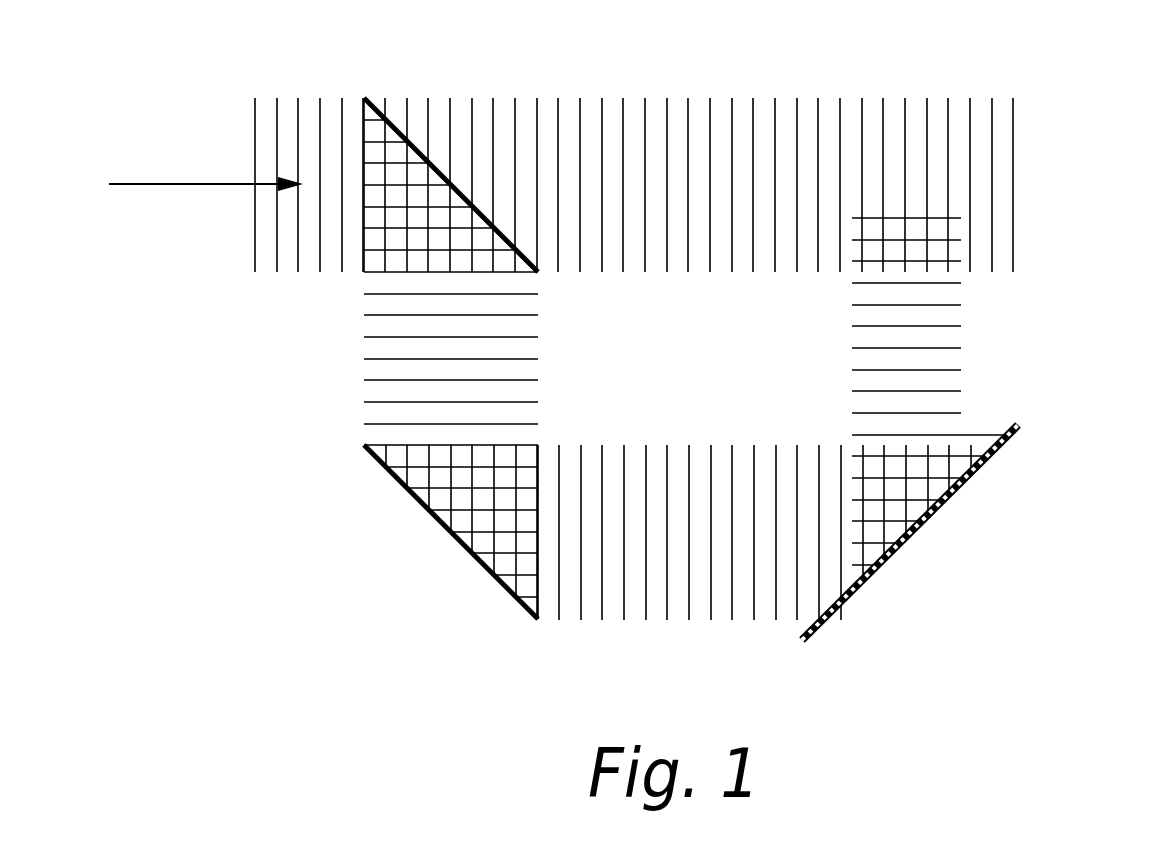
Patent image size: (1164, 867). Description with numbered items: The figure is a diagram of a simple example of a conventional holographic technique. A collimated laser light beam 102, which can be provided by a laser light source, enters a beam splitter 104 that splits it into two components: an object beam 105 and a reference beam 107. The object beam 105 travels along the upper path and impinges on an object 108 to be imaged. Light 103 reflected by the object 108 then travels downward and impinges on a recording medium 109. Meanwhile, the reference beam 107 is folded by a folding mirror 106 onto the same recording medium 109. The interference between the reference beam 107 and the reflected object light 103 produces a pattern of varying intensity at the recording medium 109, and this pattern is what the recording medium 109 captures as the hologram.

The collimated laser light beam 102 is at (152, 183).
The light reflected by object 103 is at (1015, 368).
The beam splitter 104 is at (382, 110).
The object beam 105 is at (667, 86).
The folding mirror 106 is at (420, 503).
The reference beam 107 is at (647, 433).
The object 108 is at (901, 146).
The recording medium 109 is at (927, 523).